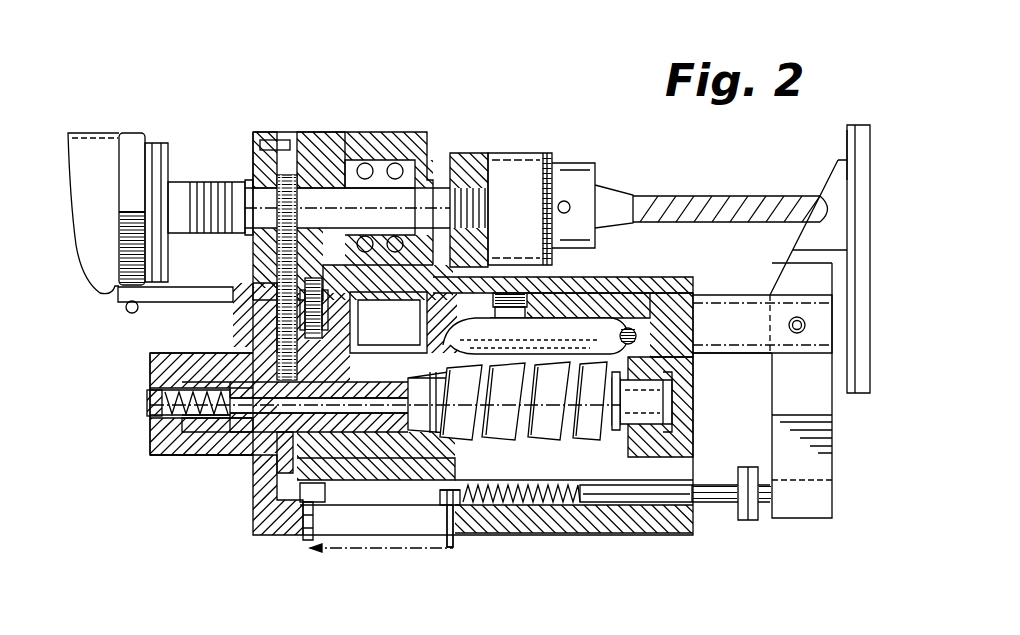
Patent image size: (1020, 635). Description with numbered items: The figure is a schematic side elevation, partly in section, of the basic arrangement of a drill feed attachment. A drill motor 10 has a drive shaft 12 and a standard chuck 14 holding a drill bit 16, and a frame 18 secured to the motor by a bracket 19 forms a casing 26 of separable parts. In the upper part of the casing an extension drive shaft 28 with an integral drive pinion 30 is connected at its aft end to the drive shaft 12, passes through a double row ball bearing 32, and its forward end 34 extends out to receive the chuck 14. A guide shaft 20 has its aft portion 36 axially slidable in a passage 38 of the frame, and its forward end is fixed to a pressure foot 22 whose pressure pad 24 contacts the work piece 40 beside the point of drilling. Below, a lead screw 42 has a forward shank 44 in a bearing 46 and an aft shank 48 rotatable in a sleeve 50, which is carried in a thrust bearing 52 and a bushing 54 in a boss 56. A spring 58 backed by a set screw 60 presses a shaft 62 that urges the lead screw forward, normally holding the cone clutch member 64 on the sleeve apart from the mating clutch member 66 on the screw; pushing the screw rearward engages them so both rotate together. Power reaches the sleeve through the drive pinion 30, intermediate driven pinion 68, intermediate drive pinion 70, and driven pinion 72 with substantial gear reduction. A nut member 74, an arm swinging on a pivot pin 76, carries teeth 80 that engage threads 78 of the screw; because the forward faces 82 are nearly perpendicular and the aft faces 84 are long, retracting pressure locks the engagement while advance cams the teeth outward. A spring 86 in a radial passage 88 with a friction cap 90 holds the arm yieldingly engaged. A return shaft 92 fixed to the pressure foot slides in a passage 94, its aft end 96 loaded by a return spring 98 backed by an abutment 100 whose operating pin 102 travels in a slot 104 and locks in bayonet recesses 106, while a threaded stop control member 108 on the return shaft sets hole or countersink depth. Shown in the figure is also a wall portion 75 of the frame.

The drill motor 10 is at (128, 125).
The drive shaft 12 is at (182, 182).
The chuck 14 is at (535, 155).
The drill bit 16 is at (690, 196).
The frame 18 is at (250, 510).
The bracket 19 is at (168, 302).
The guide shaft 20 is at (735, 368).
The pressure foot 22 is at (828, 455).
The pressure pad 24 is at (860, 198).
The casing 26 is at (258, 250).
The extension drive shaft 28 is at (320, 172).
The drive pinion 30 is at (300, 170).
The double row ball bearing 32 is at (410, 175).
The forward end 34 is at (470, 185).
The aft portion 36 is at (630, 280).
The passage 38 is at (760, 298).
The work piece 40 is at (846, 142).
The lead screw 42 is at (445, 440).
The forward shank 44 is at (655, 404).
The bearing 46 is at (672, 420).
The aft shank 48 is at (365, 398).
The sleeve 50 is at (270, 465).
The thrust bearing 52 is at (330, 492).
The bushing 54 is at (205, 455).
The boss 56 is at (185, 440).
The spring 58 is at (165, 430).
The set screw 60 is at (150, 408).
The shaft 62 is at (230, 400).
The cone clutch member 64 is at (420, 478).
The clutch member 66 is at (450, 460).
The intermediate driven pinion 68 is at (278, 265).
The intermediate drive pinion 70 is at (312, 280).
The driven pinion 72 is at (288, 452).
The nut member 74 is at (568, 343).
The housing wall 75 is at (655, 300).
The pivot pin 76 is at (690, 295).
The threads 78 is at (580, 435).
The teeth 80 is at (490, 372).
The forward faces 82 is at (515, 435).
The aft faces 84 is at (470, 432).
The spring 86 is at (505, 292).
The radial passage 88 is at (570, 300).
The cap 90 is at (530, 300).
The return shaft 92 is at (718, 505).
The passage 94 is at (645, 500).
The aft end 96 is at (585, 502).
The return spring 98 is at (545, 505).
The abutment 100 is at (450, 505).
The operating pin 102 is at (458, 548).
The slot 104 is at (328, 548).
The bayonet recesses 106 is at (313, 520).
The stop control member 108 is at (752, 520).